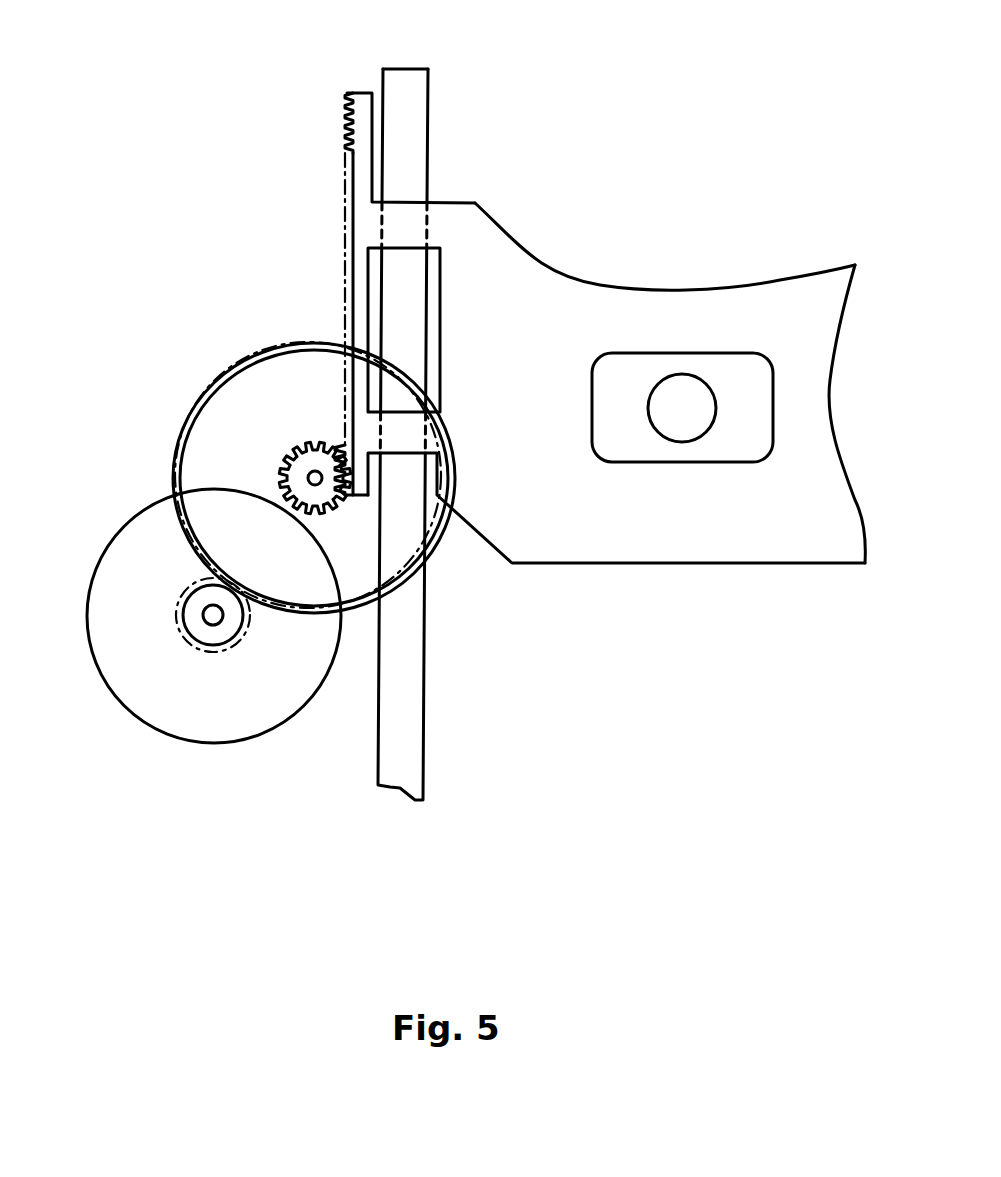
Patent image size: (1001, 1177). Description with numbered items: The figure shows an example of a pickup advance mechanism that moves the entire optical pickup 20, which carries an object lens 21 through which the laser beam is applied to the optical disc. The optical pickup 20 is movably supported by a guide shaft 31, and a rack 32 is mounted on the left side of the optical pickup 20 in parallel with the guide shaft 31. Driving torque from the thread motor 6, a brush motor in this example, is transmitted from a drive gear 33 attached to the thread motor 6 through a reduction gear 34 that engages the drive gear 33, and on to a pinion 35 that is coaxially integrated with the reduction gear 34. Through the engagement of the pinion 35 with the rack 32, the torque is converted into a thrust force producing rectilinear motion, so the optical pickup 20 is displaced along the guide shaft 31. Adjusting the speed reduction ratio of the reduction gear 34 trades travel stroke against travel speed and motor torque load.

The thread motor 6 is at (103, 683).
The optical pickup 20 is at (565, 278).
The object lens 21 is at (695, 375).
The guide shaft 31 is at (415, 115).
The rack 32 is at (345, 122).
The drive gear 33 is at (245, 645).
The reduction gear 34 is at (180, 460).
The pinion 35 is at (283, 462).